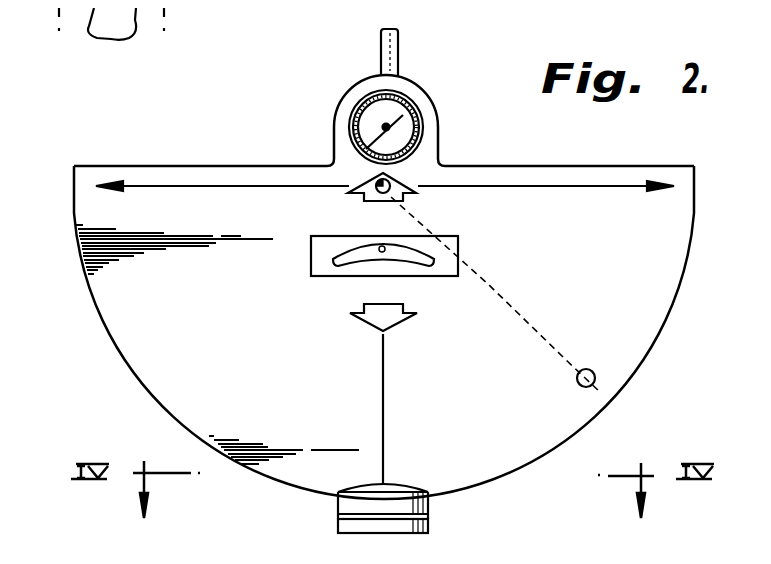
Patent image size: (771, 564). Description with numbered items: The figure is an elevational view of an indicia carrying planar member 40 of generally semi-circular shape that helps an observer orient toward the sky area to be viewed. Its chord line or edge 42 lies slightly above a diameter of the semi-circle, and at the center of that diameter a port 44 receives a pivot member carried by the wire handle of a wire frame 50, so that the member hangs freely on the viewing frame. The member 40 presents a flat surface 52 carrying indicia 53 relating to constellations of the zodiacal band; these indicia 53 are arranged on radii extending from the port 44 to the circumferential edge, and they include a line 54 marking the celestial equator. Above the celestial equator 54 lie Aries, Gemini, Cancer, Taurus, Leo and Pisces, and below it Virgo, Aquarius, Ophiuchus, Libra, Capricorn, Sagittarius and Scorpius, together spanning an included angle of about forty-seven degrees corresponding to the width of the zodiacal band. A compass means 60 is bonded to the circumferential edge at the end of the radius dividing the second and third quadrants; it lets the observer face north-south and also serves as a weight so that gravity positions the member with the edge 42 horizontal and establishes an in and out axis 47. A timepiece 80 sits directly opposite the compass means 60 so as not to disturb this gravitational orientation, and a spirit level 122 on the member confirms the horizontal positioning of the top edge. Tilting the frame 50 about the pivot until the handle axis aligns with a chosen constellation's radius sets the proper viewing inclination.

The indicia carrying planar member 40 is at (132, 150).
The chord line or edge 42 is at (278, 165).
The port 44 is at (393, 180).
The in and out axis 47 is at (382, 403).
The wire frame 50 is at (390, 42).
The flat surface 52 is at (172, 358).
The indicia 53 is at (637, 213).
The celestial equator line 54 is at (598, 393).
The compass means 60 is at (345, 502).
The timepiece 80 is at (345, 90).
The spirit level 122 is at (310, 261).